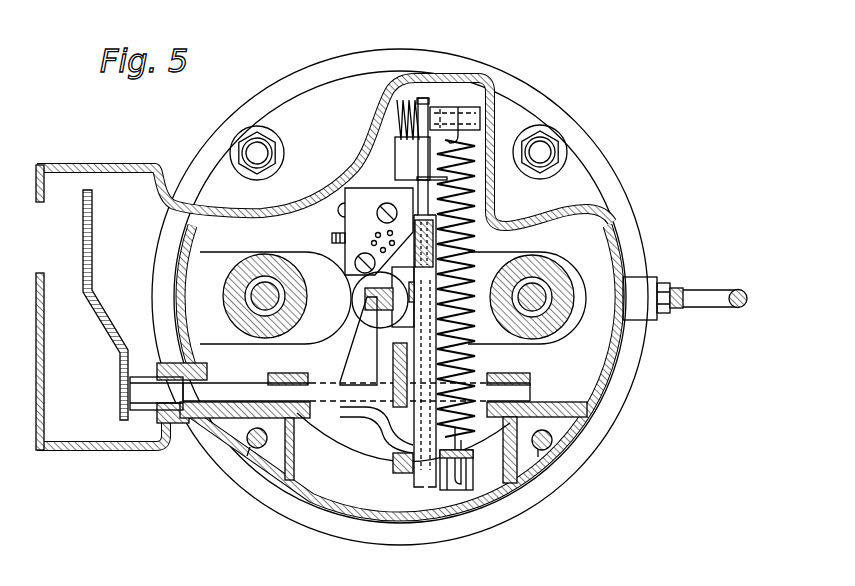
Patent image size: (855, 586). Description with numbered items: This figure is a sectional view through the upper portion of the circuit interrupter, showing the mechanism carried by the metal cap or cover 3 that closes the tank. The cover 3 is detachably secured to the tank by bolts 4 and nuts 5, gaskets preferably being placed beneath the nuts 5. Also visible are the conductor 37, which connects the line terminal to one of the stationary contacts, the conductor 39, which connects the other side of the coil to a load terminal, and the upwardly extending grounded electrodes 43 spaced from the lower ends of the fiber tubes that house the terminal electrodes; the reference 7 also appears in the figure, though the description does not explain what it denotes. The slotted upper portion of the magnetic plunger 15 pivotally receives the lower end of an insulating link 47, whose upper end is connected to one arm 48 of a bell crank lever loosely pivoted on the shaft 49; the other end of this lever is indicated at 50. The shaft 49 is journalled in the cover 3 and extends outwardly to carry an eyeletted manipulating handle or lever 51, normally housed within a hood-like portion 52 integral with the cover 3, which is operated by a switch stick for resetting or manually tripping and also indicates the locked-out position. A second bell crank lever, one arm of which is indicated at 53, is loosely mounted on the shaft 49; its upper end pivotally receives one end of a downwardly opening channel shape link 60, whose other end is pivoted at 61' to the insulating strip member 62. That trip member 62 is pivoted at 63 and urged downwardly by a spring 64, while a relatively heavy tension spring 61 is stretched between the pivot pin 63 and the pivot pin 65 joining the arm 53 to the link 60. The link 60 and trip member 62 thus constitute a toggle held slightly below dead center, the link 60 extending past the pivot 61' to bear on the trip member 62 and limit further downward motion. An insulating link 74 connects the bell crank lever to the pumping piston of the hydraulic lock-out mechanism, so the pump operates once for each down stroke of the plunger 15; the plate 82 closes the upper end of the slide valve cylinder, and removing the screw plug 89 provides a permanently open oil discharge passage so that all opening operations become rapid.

The metal cap or cover 3 is at (622, 218).
The bolts 4 is at (13, 437).
The nuts 5 is at (272, 142).
The roller housing 7 is at (522, 350).
The magnetic plunger 15 is at (380, 318).
The conductor 37 is at (560, 272).
The conductor 39 is at (258, 283).
The grounded electrodes 43 is at (740, 290).
The insulating link 47 is at (405, 312).
The arm of bell crank lever 48 is at (357, 338).
The shaft 49 is at (226, 392).
The other end of bell crank lever 50 is at (386, 452).
The manipulating handle or lever 51 is at (83, 236).
The hood-like portion 52 is at (38, 308).
The arm of second bell crank lever 53 is at (442, 490).
The channel shape link 60 is at (424, 351).
The tension spring 61 is at (479, 295).
The pivot 61' is at (422, 258).
The insulating strip member 62 is at (424, 96).
The pivot pin 63 is at (470, 107).
The spring 64 is at (394, 104).
The pivot pin 65 is at (402, 474).
The insulating link 74 is at (407, 347).
The plate 82 is at (350, 224).
The screw plug 89 is at (332, 240).